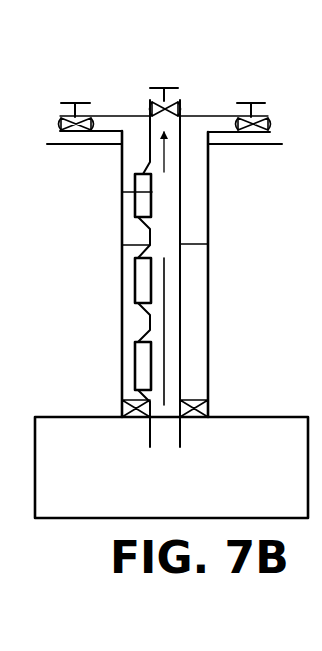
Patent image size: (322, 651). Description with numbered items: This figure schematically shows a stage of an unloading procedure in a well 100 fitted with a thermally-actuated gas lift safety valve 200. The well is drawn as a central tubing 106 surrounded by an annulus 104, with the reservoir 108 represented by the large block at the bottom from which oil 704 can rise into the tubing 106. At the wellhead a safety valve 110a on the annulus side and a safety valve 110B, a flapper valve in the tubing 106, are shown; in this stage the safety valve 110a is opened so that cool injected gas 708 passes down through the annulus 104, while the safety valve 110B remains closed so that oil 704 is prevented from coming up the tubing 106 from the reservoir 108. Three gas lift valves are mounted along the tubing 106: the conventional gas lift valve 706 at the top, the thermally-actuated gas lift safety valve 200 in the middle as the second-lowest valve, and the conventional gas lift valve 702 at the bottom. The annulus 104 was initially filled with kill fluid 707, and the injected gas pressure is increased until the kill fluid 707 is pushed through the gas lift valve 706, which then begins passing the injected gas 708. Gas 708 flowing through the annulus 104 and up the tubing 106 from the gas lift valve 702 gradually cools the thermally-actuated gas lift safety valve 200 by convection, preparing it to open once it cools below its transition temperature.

The well 100 is at (120, 56).
The safety valve 110a is at (72, 101).
The safety valve 110B is at (170, 99).
The annulus 104 is at (198, 230).
The tubing 106 is at (184, 244).
The reservoir 108 is at (267, 418).
The thermally-actuated gas lift safety valve 200 is at (143, 272).
The gas lift valve 702 is at (137, 361).
The oil 704 is at (168, 341).
The gas lift valve 706 is at (122, 176).
The kill fluid 707 is at (136, 218).
The injected gas 708 is at (156, 190).